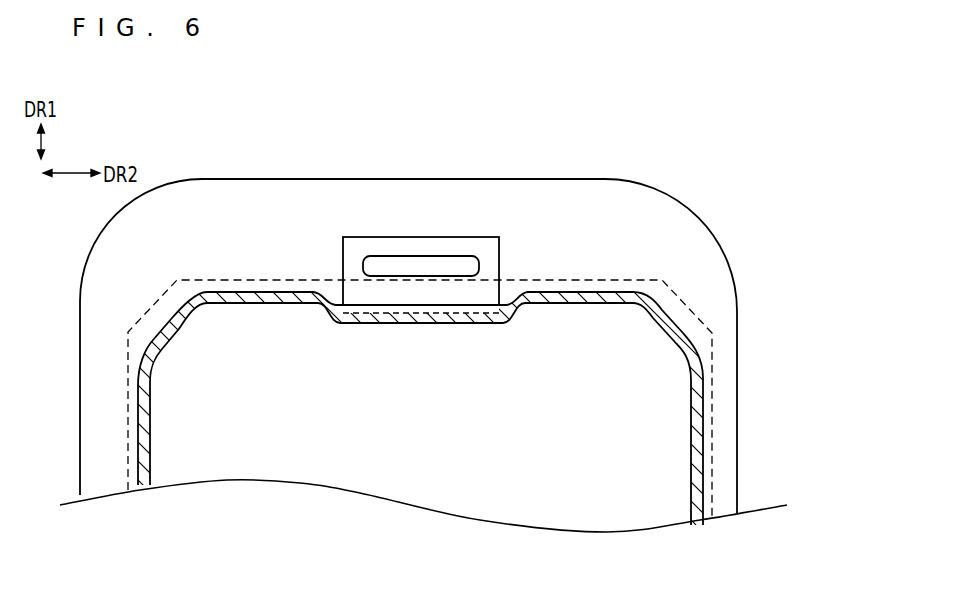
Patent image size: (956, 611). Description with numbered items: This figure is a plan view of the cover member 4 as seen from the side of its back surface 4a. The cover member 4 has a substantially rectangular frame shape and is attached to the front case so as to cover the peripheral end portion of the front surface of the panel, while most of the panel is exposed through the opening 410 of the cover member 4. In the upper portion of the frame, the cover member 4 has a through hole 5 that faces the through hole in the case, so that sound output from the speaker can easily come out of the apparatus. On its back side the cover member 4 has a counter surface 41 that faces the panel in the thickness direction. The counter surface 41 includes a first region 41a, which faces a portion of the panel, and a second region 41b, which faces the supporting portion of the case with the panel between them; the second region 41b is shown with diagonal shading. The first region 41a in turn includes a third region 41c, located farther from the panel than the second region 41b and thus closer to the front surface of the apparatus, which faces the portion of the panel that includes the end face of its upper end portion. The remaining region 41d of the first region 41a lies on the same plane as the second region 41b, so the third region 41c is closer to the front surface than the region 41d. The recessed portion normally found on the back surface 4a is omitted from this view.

The cover member 4 is at (657, 207).
The back surface 4a is at (722, 260).
The through hole 5 is at (383, 259).
The counter surface 41 is at (705, 340).
The first region 41a is at (500, 383).
The second region 41b is at (565, 293).
The third region 41c is at (468, 293).
The region 41d is at (422, 308).
The opening 410 is at (188, 417).